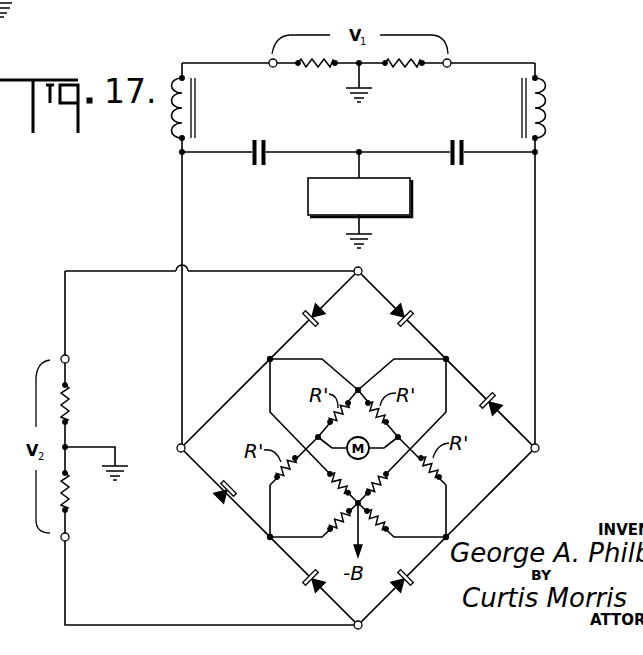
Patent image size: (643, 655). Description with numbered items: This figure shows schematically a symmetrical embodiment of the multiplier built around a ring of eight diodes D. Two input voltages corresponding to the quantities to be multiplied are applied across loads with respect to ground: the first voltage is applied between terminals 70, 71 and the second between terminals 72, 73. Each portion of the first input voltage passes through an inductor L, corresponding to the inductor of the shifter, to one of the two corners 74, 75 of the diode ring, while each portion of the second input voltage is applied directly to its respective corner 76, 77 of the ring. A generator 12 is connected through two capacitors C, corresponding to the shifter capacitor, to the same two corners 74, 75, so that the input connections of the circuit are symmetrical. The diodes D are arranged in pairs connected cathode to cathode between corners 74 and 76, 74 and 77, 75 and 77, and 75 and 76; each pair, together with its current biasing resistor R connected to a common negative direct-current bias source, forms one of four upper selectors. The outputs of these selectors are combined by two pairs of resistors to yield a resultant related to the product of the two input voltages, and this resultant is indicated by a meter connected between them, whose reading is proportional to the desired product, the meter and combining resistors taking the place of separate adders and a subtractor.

The generator 12 is at (411, 196).
The terminal 70 is at (271, 67).
The terminal 71 is at (450, 67).
The terminal 72 is at (70, 359).
The terminal 73 is at (70, 537).
The corner of the diode ring 74 is at (177, 447).
The corner of the diode ring 75 is at (540, 448).
The corner of the diode ring 76 is at (362, 268).
The corner of the diode ring 77 is at (362, 626).
The inductor L is at (176, 112).
The capacitor C is at (254, 160).
The diode D is at (305, 304).
The current biasing resistor R is at (338, 490).